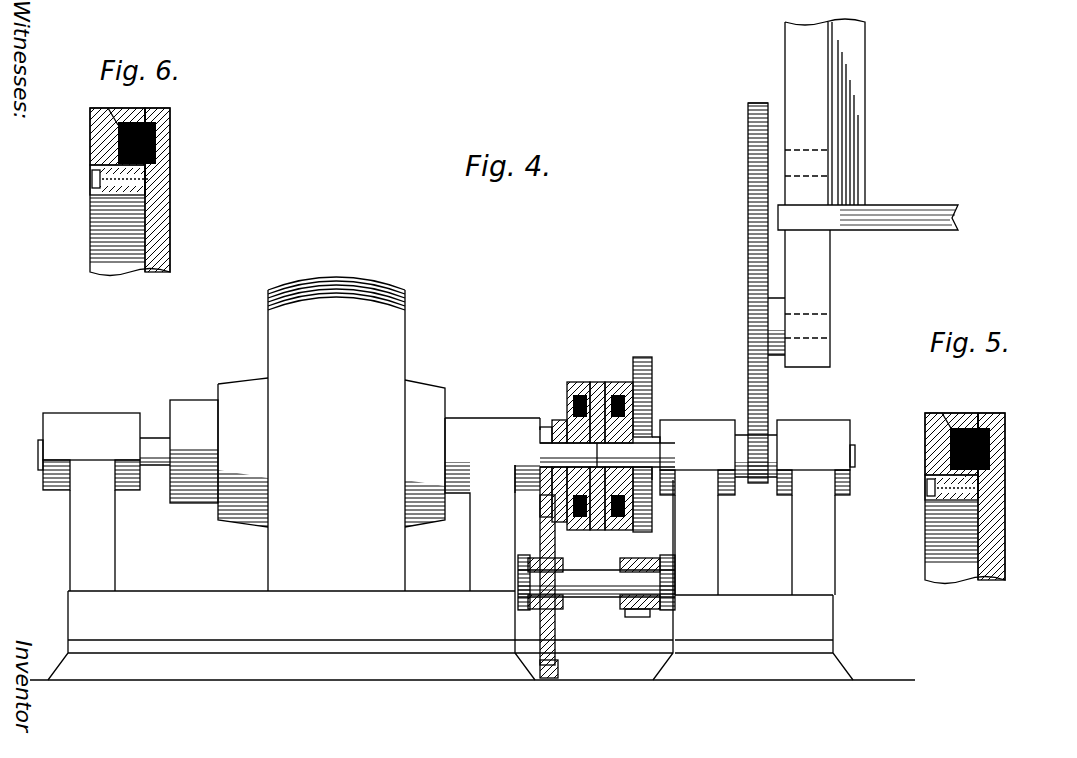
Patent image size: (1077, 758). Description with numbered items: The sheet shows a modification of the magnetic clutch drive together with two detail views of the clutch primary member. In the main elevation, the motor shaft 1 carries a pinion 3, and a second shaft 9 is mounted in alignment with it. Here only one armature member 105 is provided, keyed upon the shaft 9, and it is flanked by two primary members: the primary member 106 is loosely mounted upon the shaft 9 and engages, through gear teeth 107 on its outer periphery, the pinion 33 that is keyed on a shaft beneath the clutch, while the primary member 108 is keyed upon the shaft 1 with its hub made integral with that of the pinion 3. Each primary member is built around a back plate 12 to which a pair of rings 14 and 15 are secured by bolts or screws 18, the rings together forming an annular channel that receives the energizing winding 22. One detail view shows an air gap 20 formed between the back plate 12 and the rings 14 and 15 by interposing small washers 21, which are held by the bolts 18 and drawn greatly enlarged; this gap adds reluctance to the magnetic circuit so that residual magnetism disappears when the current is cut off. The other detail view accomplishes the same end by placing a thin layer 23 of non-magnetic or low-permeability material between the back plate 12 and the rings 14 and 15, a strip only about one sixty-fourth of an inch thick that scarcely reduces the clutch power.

In FIG. 4, the shaft 1 is at (548, 434).
In FIG. 4, the pinion 3 is at (560, 420).
In FIG. 4, the second shaft 9 is at (640, 452).
In FIG. 4, the pinion 33 is at (637, 618).
In FIG. 4, the armature member 105 is at (598, 385).
In FIG. 4, the primary member 106 is at (655, 367).
In FIG. 4, the gear teeth 107 is at (643, 357).
In FIG. 4, the primary member 108 is at (572, 388).
In FIG. 5, the back plate 12 is at (1003, 420).
In FIG. 6, the ring 14 is at (120, 113).
In FIG. 5, the ring 14 is at (957, 413).
In FIG. 6, the ring 15 is at (88, 131).
In FIG. 5, the ring 15 is at (925, 439).
In FIG. 6, the bolts or screws 18 is at (155, 178).
In FIG. 5, the bolts or screws 18 is at (987, 487).
In FIG. 5, the air gap 20 is at (980, 413).
In FIG. 5, the washers 21 is at (997, 478).
In FIG. 6, the annular winding 22 is at (167, 125).
In FIG. 6, the thin layer 23 is at (150, 112).